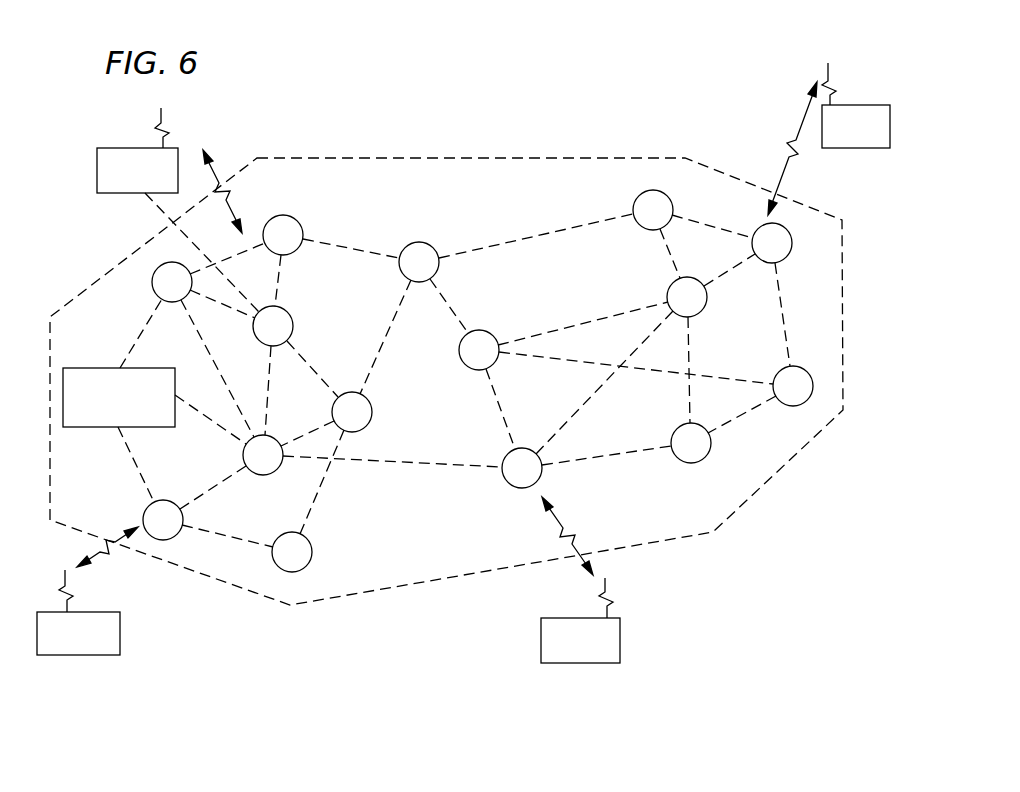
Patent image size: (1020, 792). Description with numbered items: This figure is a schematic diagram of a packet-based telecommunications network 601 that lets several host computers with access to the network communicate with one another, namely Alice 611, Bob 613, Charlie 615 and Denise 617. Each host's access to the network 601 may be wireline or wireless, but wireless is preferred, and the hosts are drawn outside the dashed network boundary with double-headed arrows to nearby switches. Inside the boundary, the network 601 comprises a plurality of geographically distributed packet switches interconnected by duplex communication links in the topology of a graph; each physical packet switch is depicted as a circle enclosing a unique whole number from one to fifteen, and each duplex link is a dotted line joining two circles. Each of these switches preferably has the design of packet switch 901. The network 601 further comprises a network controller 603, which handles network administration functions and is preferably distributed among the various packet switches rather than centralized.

The network 601 is at (521, 158).
The network controller 603 is at (78, 427).
The Alice 611 is at (120, 640).
The Bob 613 is at (840, 148).
The Charlie 615 is at (620, 630).
The Denise 617 is at (108, 193).
The packet switch 901 is at (154, 290).